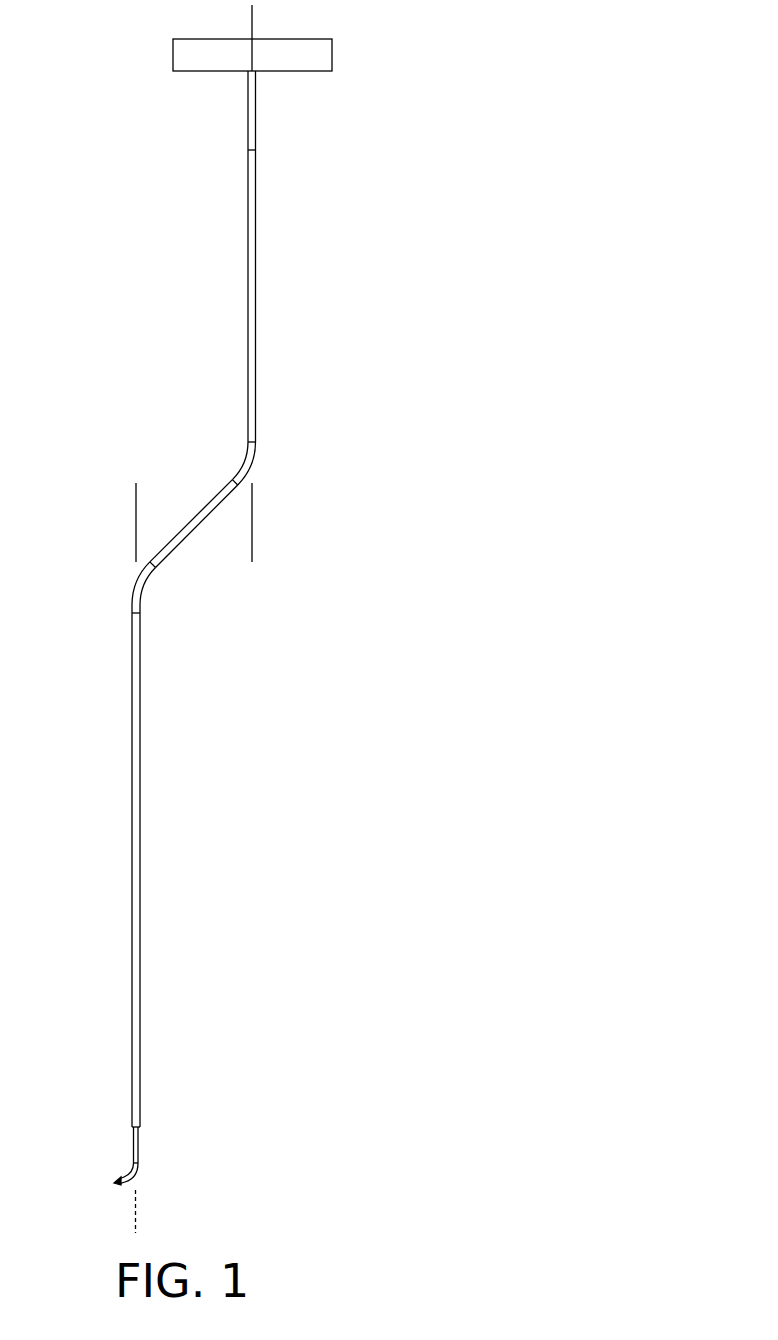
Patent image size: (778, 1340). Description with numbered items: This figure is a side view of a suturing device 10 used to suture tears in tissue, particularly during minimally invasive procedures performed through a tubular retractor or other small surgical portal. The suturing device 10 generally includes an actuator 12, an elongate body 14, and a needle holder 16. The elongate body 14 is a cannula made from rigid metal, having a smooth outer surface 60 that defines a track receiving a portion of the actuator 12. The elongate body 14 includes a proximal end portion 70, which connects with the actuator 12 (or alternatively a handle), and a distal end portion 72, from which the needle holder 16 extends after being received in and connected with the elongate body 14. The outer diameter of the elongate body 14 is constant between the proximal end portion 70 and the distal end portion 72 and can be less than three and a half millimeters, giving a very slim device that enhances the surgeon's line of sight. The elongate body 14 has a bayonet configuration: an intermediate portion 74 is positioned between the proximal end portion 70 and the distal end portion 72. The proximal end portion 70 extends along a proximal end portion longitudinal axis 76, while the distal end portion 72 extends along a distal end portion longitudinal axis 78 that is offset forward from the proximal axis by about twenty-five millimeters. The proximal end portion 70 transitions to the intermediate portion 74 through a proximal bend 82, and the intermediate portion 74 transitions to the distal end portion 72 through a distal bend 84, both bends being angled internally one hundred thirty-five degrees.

The suturing device 10 is at (398, 311).
The actuator 12 is at (348, 56).
The elongate body 14 is at (310, 404).
The needle holder 16 is at (145, 1152).
The outer surface 60 is at (256, 303).
The proximal end portion 70 is at (256, 165).
The distal end portion 72 is at (140, 1003).
The intermediate portion 74 is at (195, 528).
The proximal end portion longitudinal axis 76 is at (253, 520).
The distal end portion longitudinal axis 78 is at (135, 503).
The proximal bend 82 is at (254, 459).
The distal bend 84 is at (134, 590).